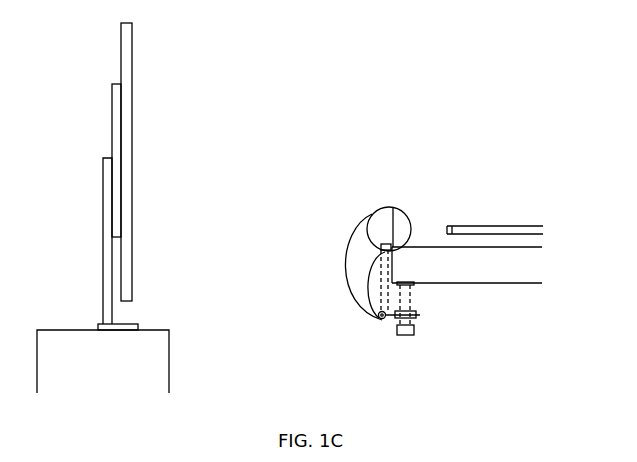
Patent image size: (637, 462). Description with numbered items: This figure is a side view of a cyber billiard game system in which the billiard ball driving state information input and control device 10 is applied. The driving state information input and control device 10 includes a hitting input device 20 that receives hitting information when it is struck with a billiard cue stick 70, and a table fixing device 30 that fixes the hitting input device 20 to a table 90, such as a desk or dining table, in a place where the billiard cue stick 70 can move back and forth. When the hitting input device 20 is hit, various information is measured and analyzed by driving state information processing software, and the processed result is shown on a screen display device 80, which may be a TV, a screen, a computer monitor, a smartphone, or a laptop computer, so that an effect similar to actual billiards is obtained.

The driving state information input and control device 10 is at (441, 176).
The hitting input device 20 is at (371, 215).
The table fixing device 30 is at (420, 315).
The billiard cue stick 70 is at (498, 227).
The screen display device 80 is at (133, 63).
The table 90 is at (493, 274).